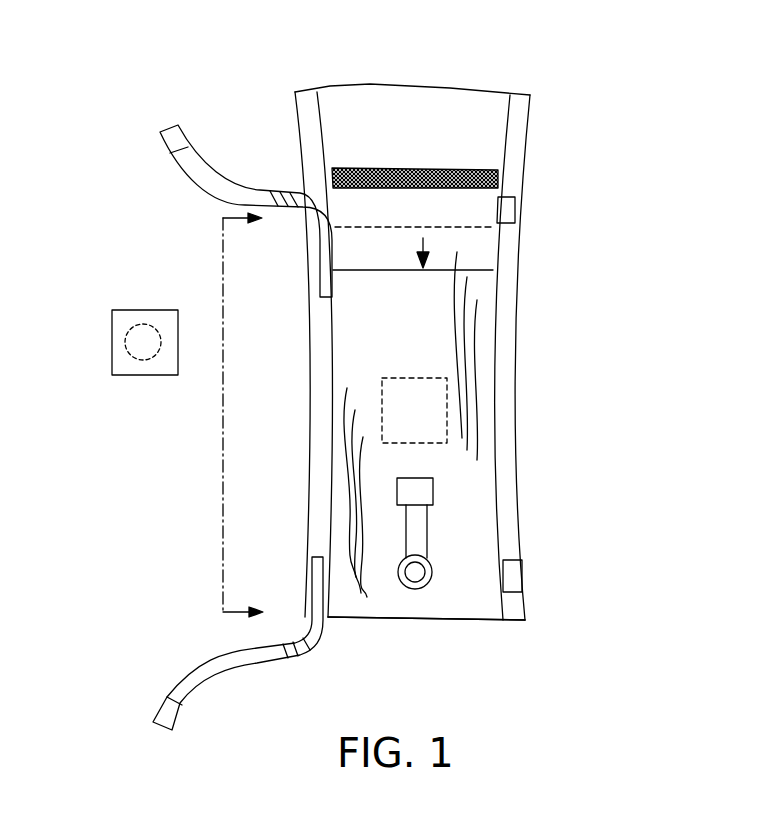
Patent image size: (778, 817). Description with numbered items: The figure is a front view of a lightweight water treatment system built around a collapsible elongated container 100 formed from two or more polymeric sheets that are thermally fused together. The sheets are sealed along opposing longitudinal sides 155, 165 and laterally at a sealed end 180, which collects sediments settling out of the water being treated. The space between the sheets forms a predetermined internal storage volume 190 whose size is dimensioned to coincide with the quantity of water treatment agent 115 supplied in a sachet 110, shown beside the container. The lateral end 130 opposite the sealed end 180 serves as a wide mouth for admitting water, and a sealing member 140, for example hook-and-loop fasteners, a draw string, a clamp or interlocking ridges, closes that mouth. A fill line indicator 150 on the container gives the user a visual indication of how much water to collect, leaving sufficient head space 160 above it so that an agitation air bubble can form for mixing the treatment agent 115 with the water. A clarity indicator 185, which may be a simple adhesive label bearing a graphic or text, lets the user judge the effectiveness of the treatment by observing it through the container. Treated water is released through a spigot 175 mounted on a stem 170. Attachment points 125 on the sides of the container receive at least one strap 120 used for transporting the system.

The collapsible elongated container 100 is at (267, 135).
The sachet 110 is at (140, 375).
The water treatment agent 115 is at (140, 345).
The strap 120 is at (188, 187).
The attachment points 125 is at (505, 210).
The lateral end 130 is at (440, 88).
The sealing member 140 is at (500, 185).
The fill line indicator 150 is at (423, 270).
The longitudinal side 155 is at (505, 457).
The head space 160 is at (490, 270).
The longitudinal side 165 is at (323, 498).
The stem 170 is at (417, 540).
The spigot 175 is at (420, 492).
The sealed end 180 is at (440, 620).
The clarity indicator 185 is at (450, 412).
The internal storage volume 190 is at (223, 438).